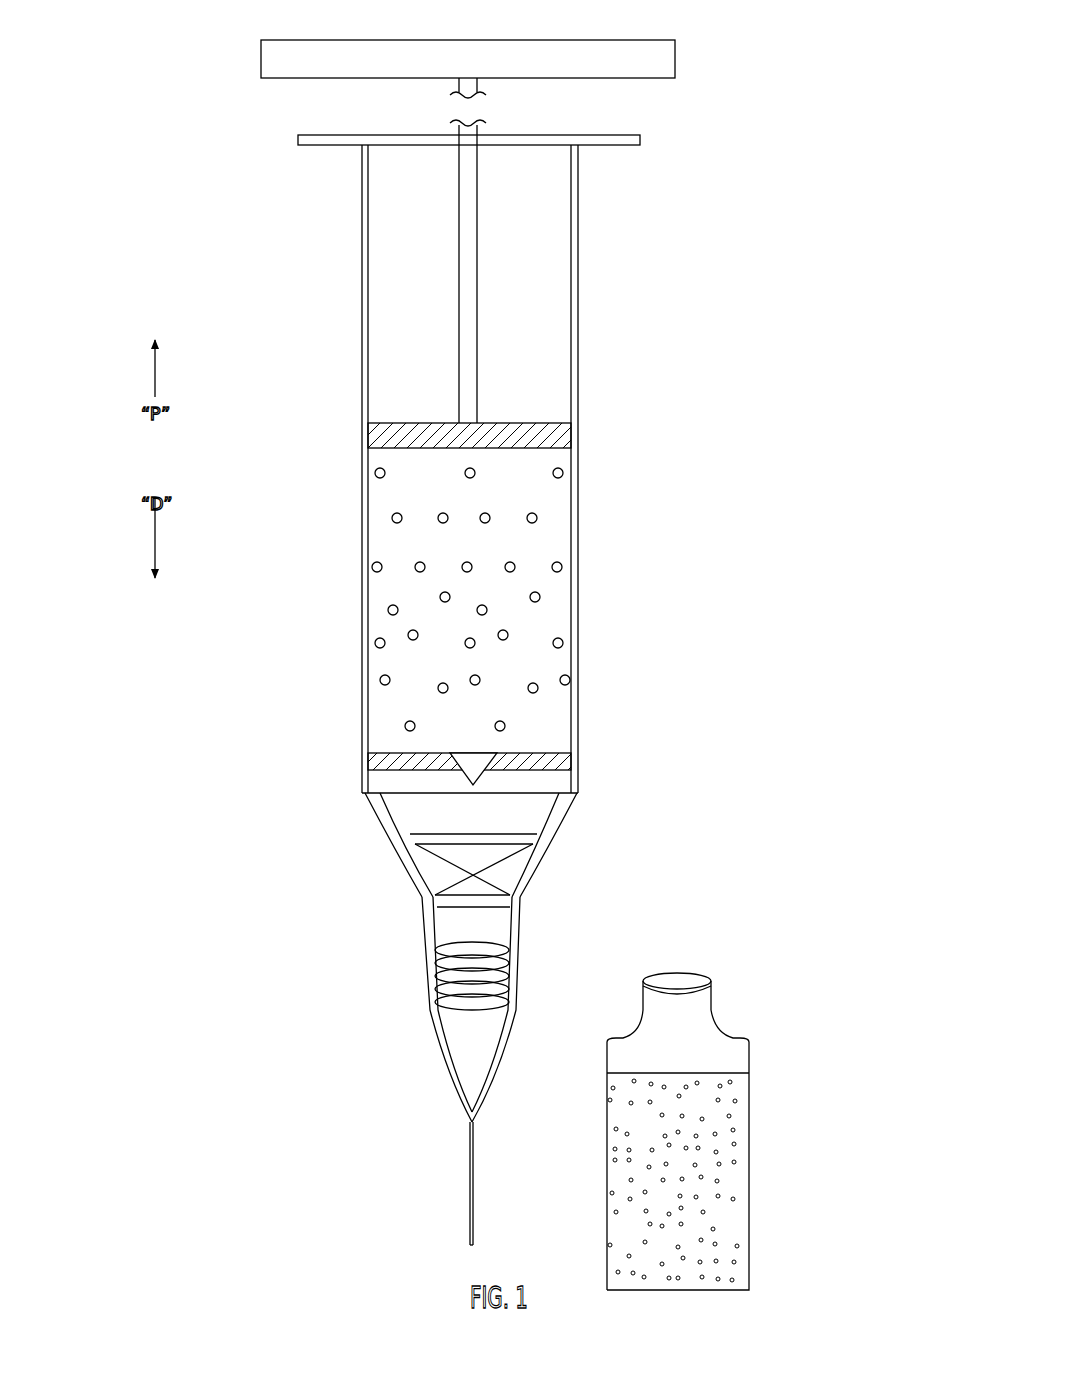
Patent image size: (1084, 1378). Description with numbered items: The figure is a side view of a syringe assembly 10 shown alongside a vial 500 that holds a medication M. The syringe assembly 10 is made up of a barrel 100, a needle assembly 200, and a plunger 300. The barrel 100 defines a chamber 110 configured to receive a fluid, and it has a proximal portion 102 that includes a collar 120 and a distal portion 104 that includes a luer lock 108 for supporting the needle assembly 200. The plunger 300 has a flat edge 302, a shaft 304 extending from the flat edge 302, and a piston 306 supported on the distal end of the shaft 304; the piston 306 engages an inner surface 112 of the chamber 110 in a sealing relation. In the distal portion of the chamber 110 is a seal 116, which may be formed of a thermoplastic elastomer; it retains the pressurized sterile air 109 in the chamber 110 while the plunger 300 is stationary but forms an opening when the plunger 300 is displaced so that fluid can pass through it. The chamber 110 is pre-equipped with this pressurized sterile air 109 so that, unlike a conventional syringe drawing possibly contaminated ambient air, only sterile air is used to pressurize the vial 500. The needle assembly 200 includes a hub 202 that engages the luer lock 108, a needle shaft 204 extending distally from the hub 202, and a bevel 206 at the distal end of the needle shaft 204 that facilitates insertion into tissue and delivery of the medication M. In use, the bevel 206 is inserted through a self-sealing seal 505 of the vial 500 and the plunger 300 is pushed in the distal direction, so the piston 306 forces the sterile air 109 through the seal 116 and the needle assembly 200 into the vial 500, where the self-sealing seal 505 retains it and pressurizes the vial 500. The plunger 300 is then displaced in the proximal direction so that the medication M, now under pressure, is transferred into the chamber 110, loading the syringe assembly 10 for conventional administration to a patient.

The syringe assembly 10 is at (167, 92).
The barrel 100 is at (362, 397).
The proximal portion 102 is at (556, 136).
The distal portion 104 is at (578, 793).
The luer lock 108 is at (515, 845).
The pressurized sterile air 109 is at (567, 548).
The chamber 110 is at (560, 400).
The inner surface 112 is at (571, 332).
The seal 116 is at (566, 762).
The collar 120 is at (640, 138).
The needle assembly 200 is at (448, 1062).
The hub 202 is at (514, 982).
The needle shaft 204 is at (474, 1148).
The bevel 206 is at (474, 1245).
The plunger 300 is at (262, 78).
The flat edge 302 is at (677, 66).
The shaft 304 is at (470, 270).
The piston 306 is at (565, 437).
The vial 500 is at (822, 1019).
The self-sealing seal 505 is at (690, 979).
The medication M is at (735, 1143).